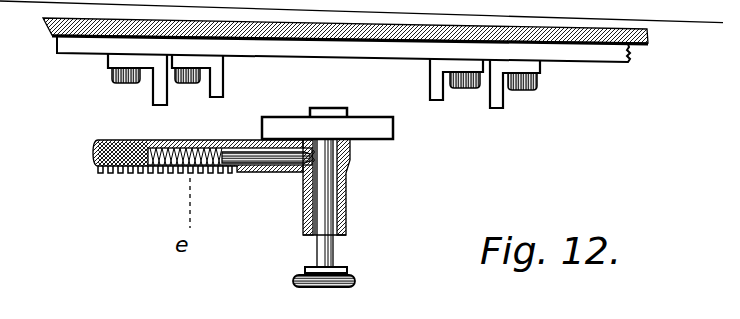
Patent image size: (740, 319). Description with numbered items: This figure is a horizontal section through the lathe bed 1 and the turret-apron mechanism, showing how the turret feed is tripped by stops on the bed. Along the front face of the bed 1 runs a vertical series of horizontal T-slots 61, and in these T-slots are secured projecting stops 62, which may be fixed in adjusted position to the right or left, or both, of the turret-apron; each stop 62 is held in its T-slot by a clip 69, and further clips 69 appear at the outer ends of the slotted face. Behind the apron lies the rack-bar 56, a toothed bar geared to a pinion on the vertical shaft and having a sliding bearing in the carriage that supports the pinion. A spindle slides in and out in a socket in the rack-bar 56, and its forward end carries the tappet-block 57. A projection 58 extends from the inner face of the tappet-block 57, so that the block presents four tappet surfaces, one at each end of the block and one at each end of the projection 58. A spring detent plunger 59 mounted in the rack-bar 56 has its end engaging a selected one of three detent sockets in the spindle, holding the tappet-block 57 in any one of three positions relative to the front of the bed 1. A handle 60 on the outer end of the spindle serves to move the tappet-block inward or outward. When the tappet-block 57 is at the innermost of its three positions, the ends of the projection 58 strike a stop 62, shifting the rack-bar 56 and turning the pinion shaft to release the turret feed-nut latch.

The bed 1 is at (647, 43).
The T-slots 61 is at (577, 55).
The projecting stops 62 is at (218, 82).
The clip 69 is at (153, 95).
The tappet-block 57 is at (286, 94).
The projection 58 is at (338, 96).
The rack-bar 56 is at (158, 141).
The spring detent plunger 59 is at (267, 163).
The handle 60 is at (305, 275).